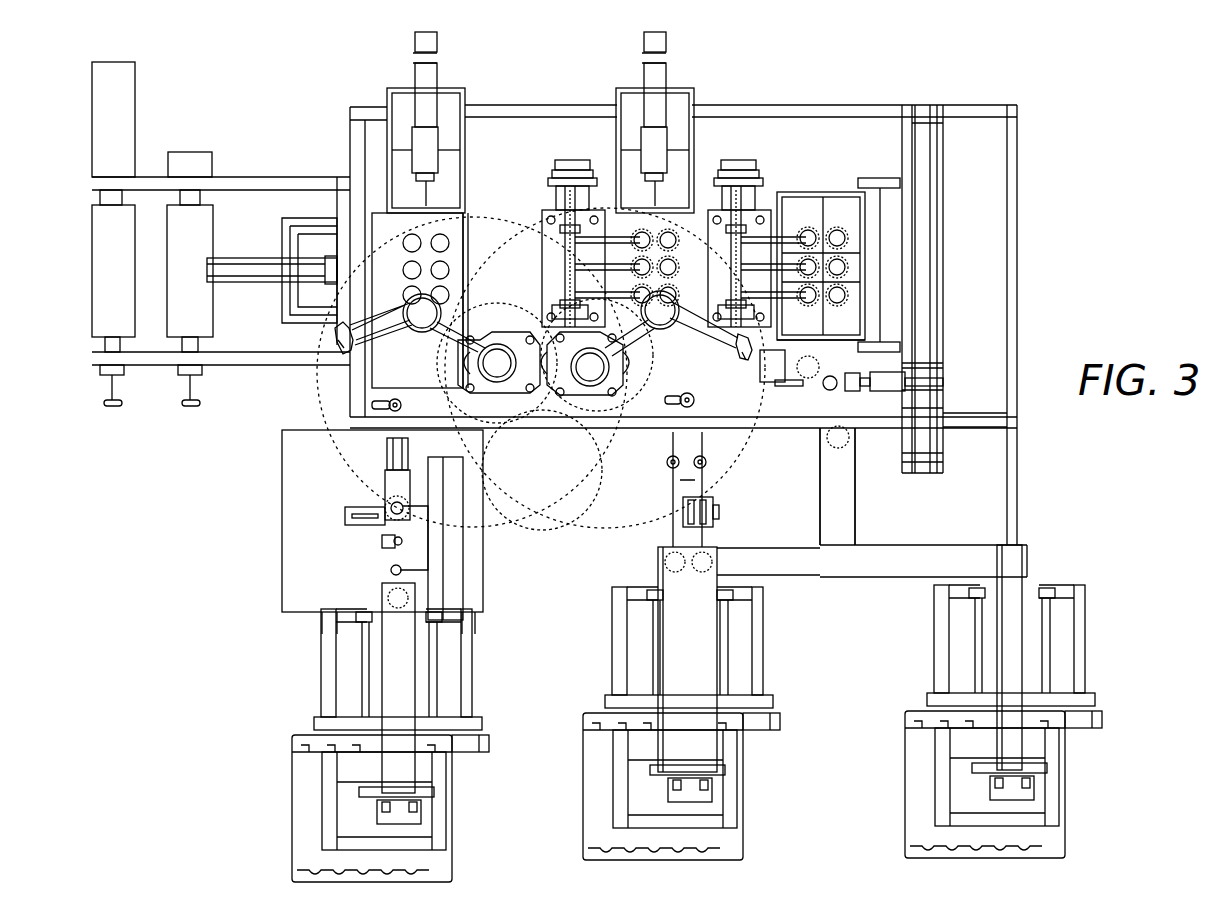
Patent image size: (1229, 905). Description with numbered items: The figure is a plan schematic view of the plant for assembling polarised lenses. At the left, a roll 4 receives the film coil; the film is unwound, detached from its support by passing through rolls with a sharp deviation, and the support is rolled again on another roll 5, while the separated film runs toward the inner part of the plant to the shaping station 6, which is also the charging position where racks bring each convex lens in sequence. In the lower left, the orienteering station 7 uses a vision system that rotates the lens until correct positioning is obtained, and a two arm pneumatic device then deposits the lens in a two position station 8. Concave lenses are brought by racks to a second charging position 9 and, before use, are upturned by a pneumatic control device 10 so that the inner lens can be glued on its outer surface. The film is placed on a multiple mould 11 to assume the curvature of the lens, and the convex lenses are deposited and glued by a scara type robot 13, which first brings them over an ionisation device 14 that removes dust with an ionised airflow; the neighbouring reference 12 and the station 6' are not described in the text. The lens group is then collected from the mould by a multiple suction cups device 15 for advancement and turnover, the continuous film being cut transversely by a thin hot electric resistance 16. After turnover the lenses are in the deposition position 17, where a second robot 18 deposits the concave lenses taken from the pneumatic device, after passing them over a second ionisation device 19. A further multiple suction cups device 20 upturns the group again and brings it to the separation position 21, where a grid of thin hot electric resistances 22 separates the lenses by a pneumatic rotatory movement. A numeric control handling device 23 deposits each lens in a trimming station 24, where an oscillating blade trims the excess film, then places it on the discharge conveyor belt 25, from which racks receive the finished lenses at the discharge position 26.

The roll 4 is at (252, 279).
The roll 5 is at (113, 234).
The shaping station 6 is at (559, 336).
The press station 6' is at (375, 732).
The orienteering station 7 is at (381, 551).
The two position station 8 is at (386, 490).
The charging position 9 is at (668, 703).
The pneumatic control device 10 is at (706, 489).
The multiple mould 11 is at (406, 242).
The bracket 12 is at (309, 270).
The robot 13 is at (497, 363).
The ionisation device 14 is at (404, 407).
The multiple suction cups device 15 is at (580, 238).
The thin hot electric resistance 16 is at (482, 300).
The deposition position 17 is at (690, 267).
The second robot 18 is at (646, 356).
The ionisation device 19 is at (698, 402).
The multiple suction cups device 20 is at (751, 238).
The separation position 21 is at (838, 265).
The grid of thin hot electric resistances 22 is at (822, 325).
The numeric control handling device 23 is at (883, 394).
The trimming station 24 is at (789, 381).
The discharge conveyor belt 25 is at (821, 486).
The discharge position 26 is at (989, 701).